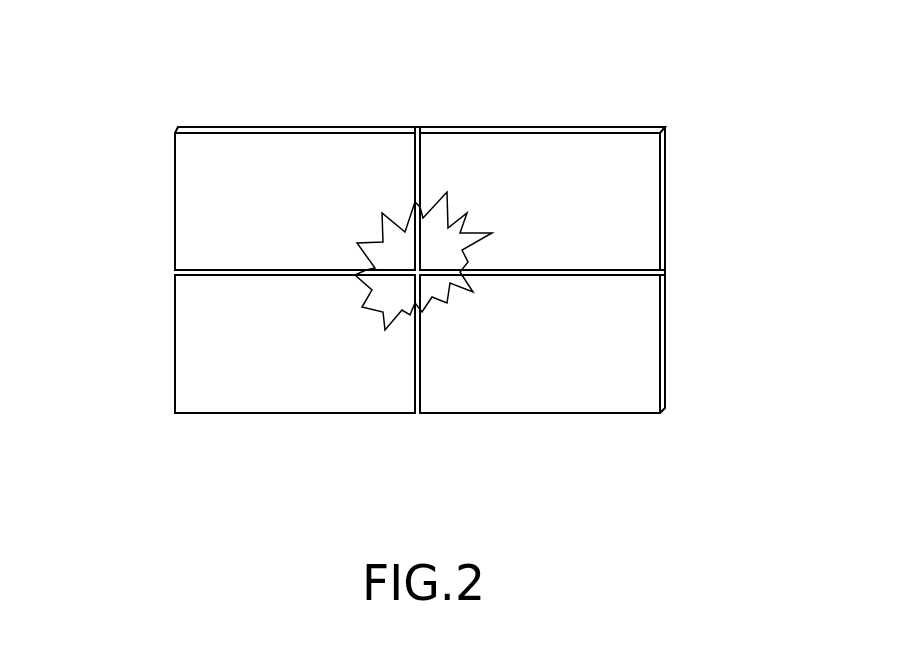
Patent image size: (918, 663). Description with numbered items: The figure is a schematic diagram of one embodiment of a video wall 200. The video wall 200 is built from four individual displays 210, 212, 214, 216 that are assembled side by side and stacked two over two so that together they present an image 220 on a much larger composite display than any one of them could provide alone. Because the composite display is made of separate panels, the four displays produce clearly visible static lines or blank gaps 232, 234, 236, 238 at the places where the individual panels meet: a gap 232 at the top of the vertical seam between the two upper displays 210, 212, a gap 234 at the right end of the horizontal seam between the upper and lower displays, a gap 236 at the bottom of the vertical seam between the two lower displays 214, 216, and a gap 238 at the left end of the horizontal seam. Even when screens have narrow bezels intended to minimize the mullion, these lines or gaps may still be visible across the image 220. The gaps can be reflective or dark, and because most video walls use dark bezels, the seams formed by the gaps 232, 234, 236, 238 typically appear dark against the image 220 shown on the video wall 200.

The video wall 200 is at (122, 74).
The display 210 is at (315, 112).
The display 212 is at (618, 112).
The display 214 is at (239, 447).
The display 216 is at (619, 449).
The image 220 is at (570, 208).
The static line or blank gap 232 is at (439, 110).
The static line or blank gap 234 is at (690, 270).
The static line or blank gap 236 is at (418, 437).
The static line or blank gap 238 is at (156, 266).